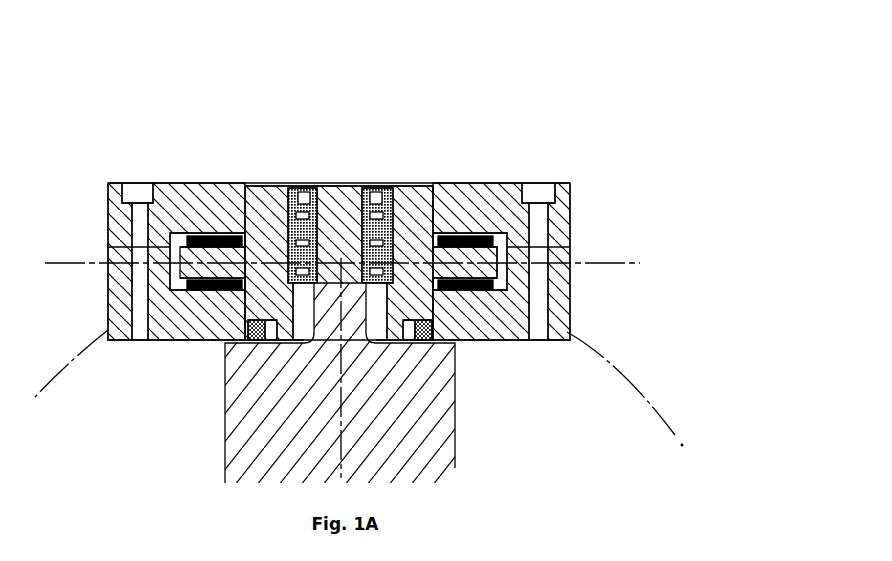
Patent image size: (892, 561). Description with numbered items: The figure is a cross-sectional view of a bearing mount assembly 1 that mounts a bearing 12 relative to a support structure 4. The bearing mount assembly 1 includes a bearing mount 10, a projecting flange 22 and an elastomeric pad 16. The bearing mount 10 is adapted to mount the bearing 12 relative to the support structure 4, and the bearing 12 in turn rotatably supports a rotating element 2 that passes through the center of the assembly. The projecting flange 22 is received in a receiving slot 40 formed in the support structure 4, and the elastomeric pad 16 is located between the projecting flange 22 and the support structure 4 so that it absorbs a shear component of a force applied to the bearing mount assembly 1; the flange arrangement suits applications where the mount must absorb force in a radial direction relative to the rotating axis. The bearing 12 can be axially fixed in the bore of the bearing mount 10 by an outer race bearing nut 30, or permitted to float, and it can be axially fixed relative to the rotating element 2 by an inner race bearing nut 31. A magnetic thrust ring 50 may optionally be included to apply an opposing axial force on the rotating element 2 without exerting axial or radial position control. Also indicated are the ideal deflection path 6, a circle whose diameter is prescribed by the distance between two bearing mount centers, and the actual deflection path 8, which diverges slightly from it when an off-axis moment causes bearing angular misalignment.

The bearing mount assembly 1 is at (431, 96).
The rotating element 2 is at (225, 438).
The support structure 4 is at (500, 208).
The ideal deflection path 6 is at (677, 435).
The actual deflection path 8 is at (620, 263).
The bearing mount 10 is at (412, 230).
The bearing 12 is at (290, 265).
The elastomeric pad 16 is at (170, 217).
The projecting flange 22 is at (400, 267).
The outer race bearing nut 30 is at (290, 203).
The inner race bearing nut 31 is at (370, 203).
The receiving slot 40 is at (505, 240).
The magnetic thrust ring 50 is at (433, 340).